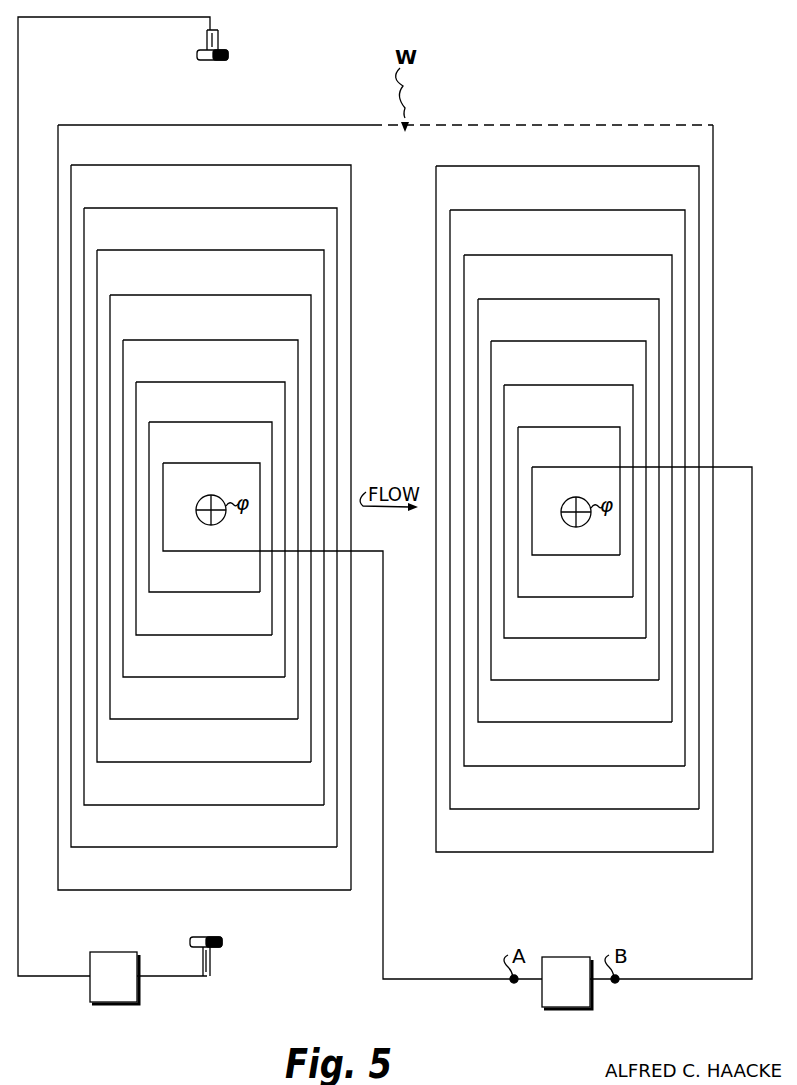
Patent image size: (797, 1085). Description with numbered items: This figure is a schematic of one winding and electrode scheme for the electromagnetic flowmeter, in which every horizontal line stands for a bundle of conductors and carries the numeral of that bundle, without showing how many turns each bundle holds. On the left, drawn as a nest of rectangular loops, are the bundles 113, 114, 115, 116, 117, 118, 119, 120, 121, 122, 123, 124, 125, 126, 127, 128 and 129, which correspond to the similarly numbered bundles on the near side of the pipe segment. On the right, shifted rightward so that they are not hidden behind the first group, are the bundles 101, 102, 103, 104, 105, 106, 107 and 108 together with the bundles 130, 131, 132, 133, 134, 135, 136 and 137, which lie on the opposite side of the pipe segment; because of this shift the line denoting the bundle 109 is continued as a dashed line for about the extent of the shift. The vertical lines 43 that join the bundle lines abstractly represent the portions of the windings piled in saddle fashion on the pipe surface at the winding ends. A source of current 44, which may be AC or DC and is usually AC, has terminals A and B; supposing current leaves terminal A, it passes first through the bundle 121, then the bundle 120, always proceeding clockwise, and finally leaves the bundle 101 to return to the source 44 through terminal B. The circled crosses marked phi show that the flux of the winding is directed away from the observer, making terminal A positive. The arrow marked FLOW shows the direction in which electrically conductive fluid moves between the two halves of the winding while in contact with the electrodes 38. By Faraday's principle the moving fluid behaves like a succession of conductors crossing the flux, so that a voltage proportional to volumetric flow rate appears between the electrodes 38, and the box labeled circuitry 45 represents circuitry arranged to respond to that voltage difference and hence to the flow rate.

The electrodes 38 is at (220, 35).
The vertical lines 43 is at (45, 548).
The source of current 44 is at (579, 994).
The circuitry 45 is at (126, 989).
The bundle 101 is at (605, 467).
The bundle 102 is at (605, 427).
The bundle 103 is at (605, 386).
The bundle 104 is at (605, 342).
The bundle 105 is at (605, 300).
The bundle 106 is at (605, 256).
The bundle 107 is at (605, 211).
The bundle 108 is at (605, 167).
The bundle 109 is at (240, 127).
The bundle 113 is at (240, 165).
The bundle 114 is at (240, 208).
The bundle 115 is at (240, 250).
The bundle 116 is at (240, 295).
The bundle 117 is at (240, 340).
The bundle 118 is at (240, 382).
The bundle 119 is at (240, 422).
The bundle 120 is at (240, 463).
The bundle 121 is at (192, 551).
The bundle 122 is at (192, 592).
The bundle 123 is at (192, 635).
The bundle 124 is at (192, 677).
The bundle 125 is at (192, 719).
The bundle 126 is at (192, 762).
The bundle 127 is at (192, 805).
The bundle 128 is at (192, 847).
The bundle 129 is at (192, 890).
The bundle 130 is at (553, 852).
The bundle 131 is at (553, 809).
The bundle 132 is at (553, 766).
The bundle 133 is at (553, 722).
The bundle 134 is at (553, 680).
The bundle 135 is at (553, 638).
The bundle 136 is at (553, 597).
The bundle 137 is at (553, 555).